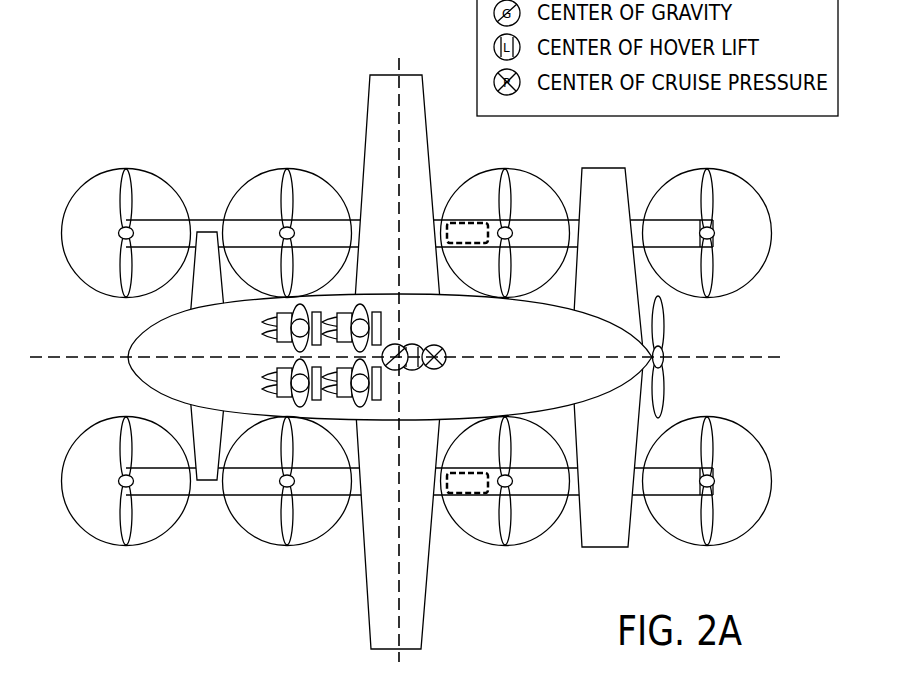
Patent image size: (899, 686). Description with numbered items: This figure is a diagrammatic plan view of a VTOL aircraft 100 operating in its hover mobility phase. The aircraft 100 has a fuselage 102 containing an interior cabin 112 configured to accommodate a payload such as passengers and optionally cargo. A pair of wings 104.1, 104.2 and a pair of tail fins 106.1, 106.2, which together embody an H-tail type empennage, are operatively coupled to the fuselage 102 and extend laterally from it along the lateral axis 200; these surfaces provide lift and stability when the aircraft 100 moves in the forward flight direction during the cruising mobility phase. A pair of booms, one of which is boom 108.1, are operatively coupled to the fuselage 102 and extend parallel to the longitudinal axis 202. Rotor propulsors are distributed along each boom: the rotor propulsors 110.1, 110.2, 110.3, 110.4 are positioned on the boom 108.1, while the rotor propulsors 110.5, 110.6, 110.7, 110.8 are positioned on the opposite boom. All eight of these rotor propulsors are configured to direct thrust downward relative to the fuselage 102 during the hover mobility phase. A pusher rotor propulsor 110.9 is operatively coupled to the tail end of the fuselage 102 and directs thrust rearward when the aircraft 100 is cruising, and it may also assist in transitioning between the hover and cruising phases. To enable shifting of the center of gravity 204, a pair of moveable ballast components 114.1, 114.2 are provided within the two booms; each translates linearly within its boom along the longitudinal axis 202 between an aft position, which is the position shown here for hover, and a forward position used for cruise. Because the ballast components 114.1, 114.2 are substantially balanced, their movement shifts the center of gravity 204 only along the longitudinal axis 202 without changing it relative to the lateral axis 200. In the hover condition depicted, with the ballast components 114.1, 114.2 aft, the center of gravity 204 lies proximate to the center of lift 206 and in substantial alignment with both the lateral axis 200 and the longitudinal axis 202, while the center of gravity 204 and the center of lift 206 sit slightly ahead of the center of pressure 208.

The aircraft 100 is at (92, 44).
The fuselage 102 is at (561, 334).
The wing 104.1 is at (422, 580).
The wing 104.2 is at (410, 163).
The tail fin 106.1 is at (600, 545).
The tail fin 106.2 is at (600, 170).
The boom 108.1 is at (196, 220).
The rotor propulsor 110.1 is at (127, 546).
The rotor propulsor 110.2 is at (287, 546).
The rotor propulsor 110.3 is at (505, 547).
The rotor propulsor 110.4 is at (707, 546).
The rotor propulsor 110.5 is at (127, 170).
The rotor propulsor 110.6 is at (287, 170).
The rotor propulsor 110.7 is at (505, 168).
The rotor propulsor 110.8 is at (707, 170).
The pusher rotor propulsor 110.9 is at (665, 345).
The interior cabin 112 is at (188, 335).
The moveable ballast component 114.1 is at (468, 488).
The moveable ballast component 114.2 is at (464, 224).
The lateral axis 200 is at (400, 62).
The longitudinal axis 202 is at (775, 357).
The center of gravity 204 is at (396, 344).
The center of lift 206 is at (414, 345).
The center of pressure 208 is at (437, 347).